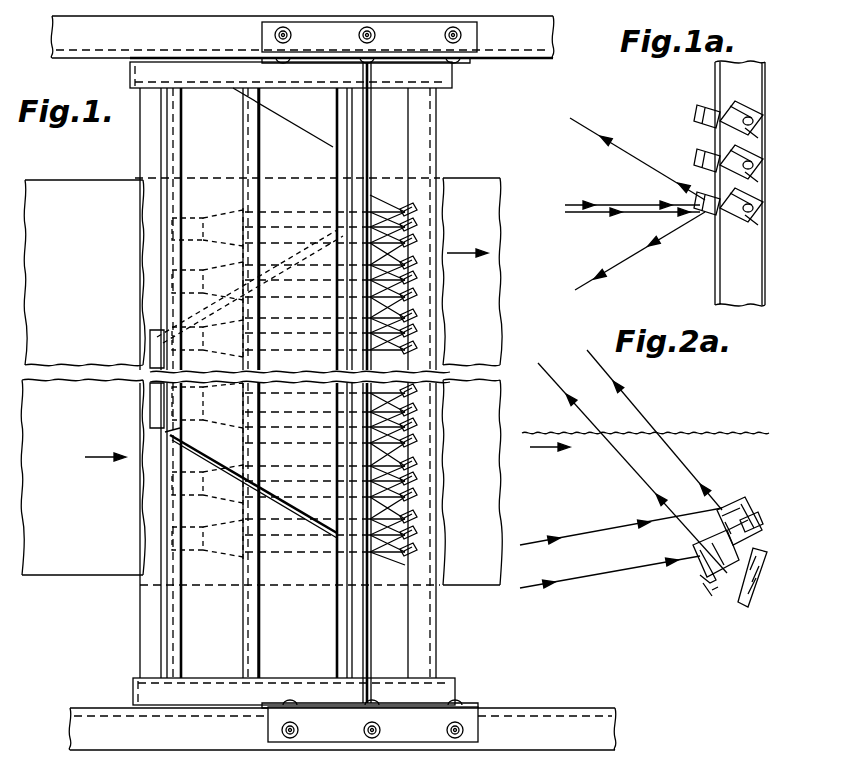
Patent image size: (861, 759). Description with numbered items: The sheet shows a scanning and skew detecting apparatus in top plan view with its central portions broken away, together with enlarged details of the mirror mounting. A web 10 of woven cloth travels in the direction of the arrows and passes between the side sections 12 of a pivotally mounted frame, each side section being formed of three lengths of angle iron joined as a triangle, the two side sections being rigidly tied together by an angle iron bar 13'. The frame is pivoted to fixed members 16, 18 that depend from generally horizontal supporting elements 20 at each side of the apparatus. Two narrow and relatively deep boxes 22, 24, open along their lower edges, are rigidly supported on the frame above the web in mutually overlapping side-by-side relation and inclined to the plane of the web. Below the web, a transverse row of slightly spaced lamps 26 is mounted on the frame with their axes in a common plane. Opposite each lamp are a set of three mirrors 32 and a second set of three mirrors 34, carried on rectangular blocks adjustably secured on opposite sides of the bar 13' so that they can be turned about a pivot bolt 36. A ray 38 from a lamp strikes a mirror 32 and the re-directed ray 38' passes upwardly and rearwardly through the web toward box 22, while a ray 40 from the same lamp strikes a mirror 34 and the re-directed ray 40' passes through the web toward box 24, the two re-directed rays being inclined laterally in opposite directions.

In FIG. 1, the web 10 is at (462, 190).
In FIG. 2A, the web 10 is at (710, 432).
In FIG. 1, the side sections 12 is at (441, 92).
In FIG. 1A, the angle iron bar 13' is at (725, 185).
In FIG. 2A, the angle iron bar 13' is at (771, 577).
In FIG. 1, the fixed member 16 is at (466, 706).
In FIG. 1, the fixed member 18 is at (450, 60).
In FIG. 1, the supporting element 20 is at (525, 38).
In FIG. 1, the box 22 is at (186, 627).
In FIG. 1, the box 24 is at (190, 147).
In FIG. 1, the lamp 26 is at (222, 218).
In FIG. 1, the mirror 32 is at (407, 210).
In FIG. 1A, the mirror 32 is at (703, 168).
In FIG. 2A, the mirror 32 is at (695, 570).
In FIG. 1, the mirror 34 is at (410, 302).
In FIG. 1A, the mirror 34 is at (744, 100).
In FIG. 2A, the mirror 34 is at (738, 512).
In FIG. 1A, the pivot bolt 36 is at (752, 170).
In FIG. 2A, the pivot bolt 36 is at (762, 517).
In FIG. 1A, the ray of light 38 is at (632, 227).
In FIG. 2A, the ray of light 38 is at (610, 587).
In FIG. 1A, the re-directed ray 38' is at (640, 254).
In FIG. 2A, the re-directed ray 38' is at (632, 468).
In FIG. 1A, the ray of light 40 is at (632, 192).
In FIG. 2A, the ray of light 40 is at (621, 524).
In FIG. 1A, the re-directed ray 40' is at (637, 159).
In FIG. 2A, the re-directed ray 40' is at (661, 430).